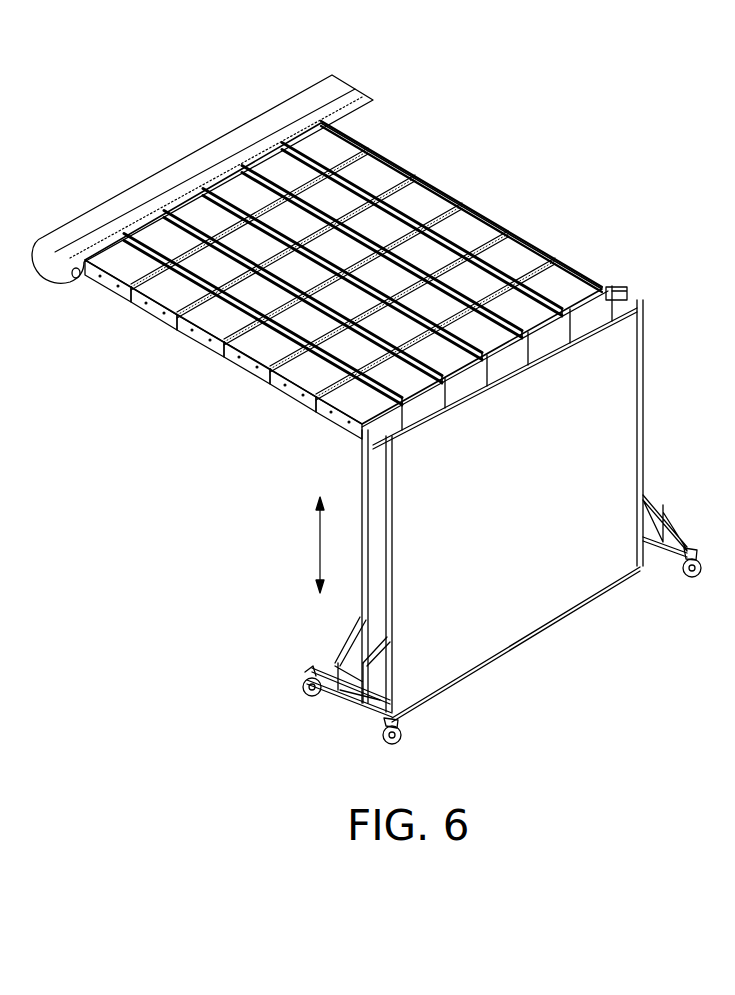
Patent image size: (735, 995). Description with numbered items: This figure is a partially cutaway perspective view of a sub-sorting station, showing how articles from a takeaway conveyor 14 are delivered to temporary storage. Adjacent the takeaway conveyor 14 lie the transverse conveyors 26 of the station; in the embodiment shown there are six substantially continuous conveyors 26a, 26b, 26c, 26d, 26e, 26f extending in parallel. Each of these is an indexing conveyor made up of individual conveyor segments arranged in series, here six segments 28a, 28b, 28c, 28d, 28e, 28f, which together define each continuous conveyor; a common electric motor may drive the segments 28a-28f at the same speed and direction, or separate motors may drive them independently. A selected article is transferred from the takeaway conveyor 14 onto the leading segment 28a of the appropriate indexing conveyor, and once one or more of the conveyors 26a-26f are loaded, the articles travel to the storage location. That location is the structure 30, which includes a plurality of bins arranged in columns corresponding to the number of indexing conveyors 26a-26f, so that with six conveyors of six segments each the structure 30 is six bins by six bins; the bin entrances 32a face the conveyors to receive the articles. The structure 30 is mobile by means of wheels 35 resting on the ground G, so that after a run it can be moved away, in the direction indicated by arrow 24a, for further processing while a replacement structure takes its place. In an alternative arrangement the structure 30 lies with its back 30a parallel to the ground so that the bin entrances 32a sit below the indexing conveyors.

The takeaway conveyor 14 is at (342, 97).
The transverse conveyors 26 is at (341, 240).
The indexing conveyor 26a is at (312, 143).
The indexing conveyor 26b is at (278, 160).
The indexing conveyor 26c is at (235, 185).
The indexing conveyor 26d is at (197, 205).
The indexing conveyor 26e is at (153, 230).
The indexing conveyor 26f is at (112, 260).
The leading conveyor segment 28a is at (92, 283).
The conveyor segment 28b is at (142, 310).
The conveyor segment 28c is at (192, 337).
The conveyor segment 28d is at (233, 367).
The conveyor segment 28e is at (283, 390).
The conveyor segment 28f is at (335, 420).
The bin entrances 32a is at (624, 303).
The structure 30 is at (518, 509).
The back 30a is at (512, 603).
The wheels 35 is at (400, 732).
The direction arrow 24a is at (190, 458).
The ground G is at (612, 731).